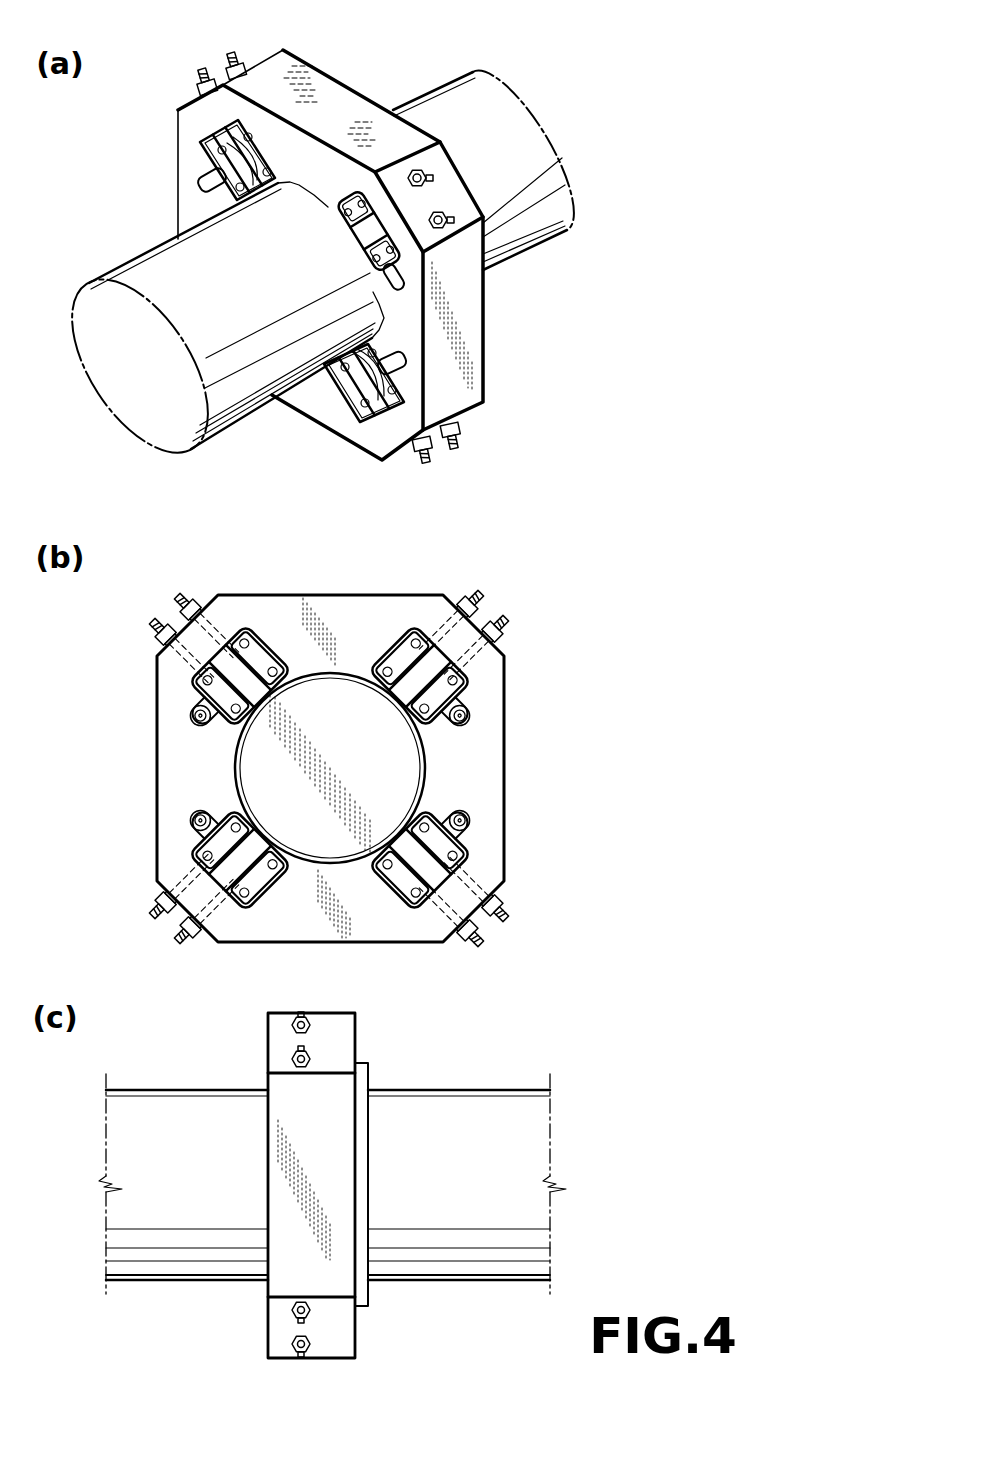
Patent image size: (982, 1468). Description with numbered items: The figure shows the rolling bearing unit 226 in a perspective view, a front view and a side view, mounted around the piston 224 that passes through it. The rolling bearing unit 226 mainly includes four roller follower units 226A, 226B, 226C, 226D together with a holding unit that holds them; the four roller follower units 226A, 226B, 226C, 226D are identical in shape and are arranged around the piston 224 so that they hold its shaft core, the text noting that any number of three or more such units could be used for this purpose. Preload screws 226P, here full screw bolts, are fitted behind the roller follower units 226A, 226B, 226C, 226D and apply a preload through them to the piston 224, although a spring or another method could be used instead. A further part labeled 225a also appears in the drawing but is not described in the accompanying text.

The piston 224 is at (436, 115).
The side plate of clamp 225a is at (456, 355).
The rolling bearing unit 226 is at (322, 93).
The roller follower unit 226A is at (243, 157).
The roller follower unit 226B is at (382, 237).
The roller follower unit 226C is at (378, 392).
The roller follower unit 226D is at (243, 855).
The preload screw 226P is at (232, 60).